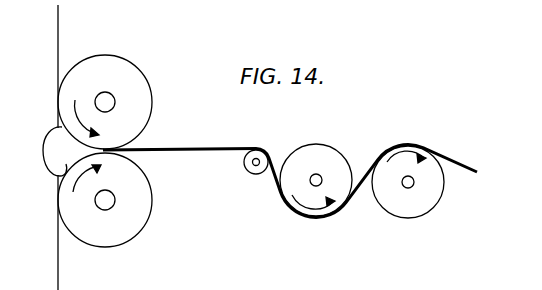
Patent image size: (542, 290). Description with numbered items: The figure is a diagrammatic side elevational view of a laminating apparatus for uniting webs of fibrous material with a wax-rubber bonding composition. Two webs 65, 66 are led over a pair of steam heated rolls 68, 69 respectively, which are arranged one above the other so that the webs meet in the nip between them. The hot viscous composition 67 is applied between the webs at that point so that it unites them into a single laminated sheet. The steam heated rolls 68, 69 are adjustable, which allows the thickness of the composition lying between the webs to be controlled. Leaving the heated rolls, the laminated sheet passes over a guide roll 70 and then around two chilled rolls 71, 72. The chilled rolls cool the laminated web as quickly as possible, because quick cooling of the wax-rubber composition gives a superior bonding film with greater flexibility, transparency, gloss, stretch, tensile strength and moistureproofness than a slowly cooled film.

The web 65 is at (59, 36).
The web 66 is at (58, 273).
The hot viscous composition 67 is at (60, 160).
The steam heated roll 68 is at (115, 72).
The steam heated roll 69 is at (138, 205).
The guide roll 70 is at (250, 173).
The chilled roll 71 is at (355, 138).
The chilled roll 72 is at (422, 171).